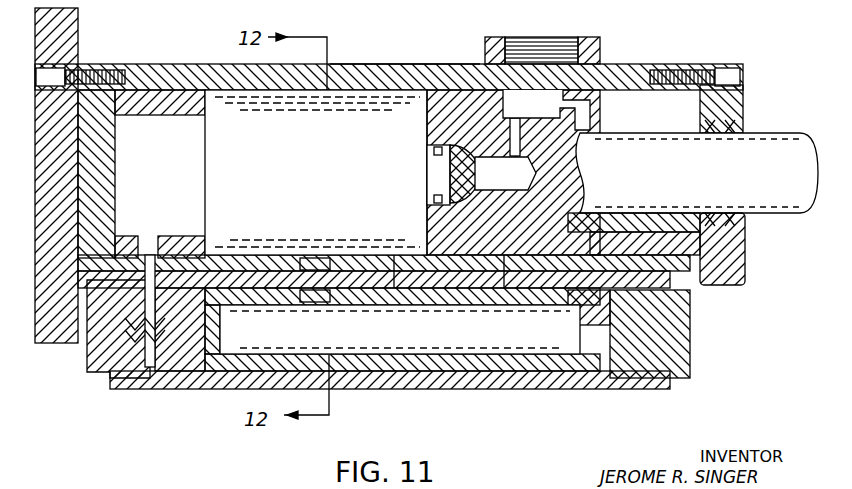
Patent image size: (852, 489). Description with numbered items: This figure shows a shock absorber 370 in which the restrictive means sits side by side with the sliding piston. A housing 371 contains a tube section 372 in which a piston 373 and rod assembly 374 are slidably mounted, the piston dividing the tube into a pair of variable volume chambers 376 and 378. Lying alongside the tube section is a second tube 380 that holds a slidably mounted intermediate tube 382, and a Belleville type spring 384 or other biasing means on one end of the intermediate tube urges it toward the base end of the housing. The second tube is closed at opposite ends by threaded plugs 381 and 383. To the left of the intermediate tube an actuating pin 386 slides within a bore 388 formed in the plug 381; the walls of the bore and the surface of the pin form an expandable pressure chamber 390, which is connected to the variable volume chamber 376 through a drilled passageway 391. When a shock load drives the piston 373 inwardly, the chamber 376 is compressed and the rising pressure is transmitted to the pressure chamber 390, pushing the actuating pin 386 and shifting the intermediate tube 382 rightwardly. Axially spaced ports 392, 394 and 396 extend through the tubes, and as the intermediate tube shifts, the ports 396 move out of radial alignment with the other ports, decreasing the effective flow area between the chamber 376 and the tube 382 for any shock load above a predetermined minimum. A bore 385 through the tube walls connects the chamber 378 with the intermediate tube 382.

The shock absorber 370 is at (632, 46).
The housing 371 is at (195, 62).
The tube section 372 is at (360, 63).
The piston 373 is at (427, 123).
The rod assembly 374 is at (772, 133).
The variable volume chamber 376 is at (292, 167).
The variable volume chamber 378 is at (550, 114).
The second tube 380 is at (450, 390).
The threaded plug 381 is at (92, 380).
The intermediate tube 382 is at (246, 360).
The threaded plug 383 is at (688, 347).
The Belleville type spring 384 is at (615, 370).
The bore 385 is at (505, 280).
The actuating pin 386 is at (175, 380).
The bore 388 is at (152, 380).
The expandable pressure chamber 390 is at (124, 338).
The drilled passageway 391 is at (146, 300).
The port 392 is at (235, 258).
The port 394 is at (327, 258).
The port 396 is at (327, 300).